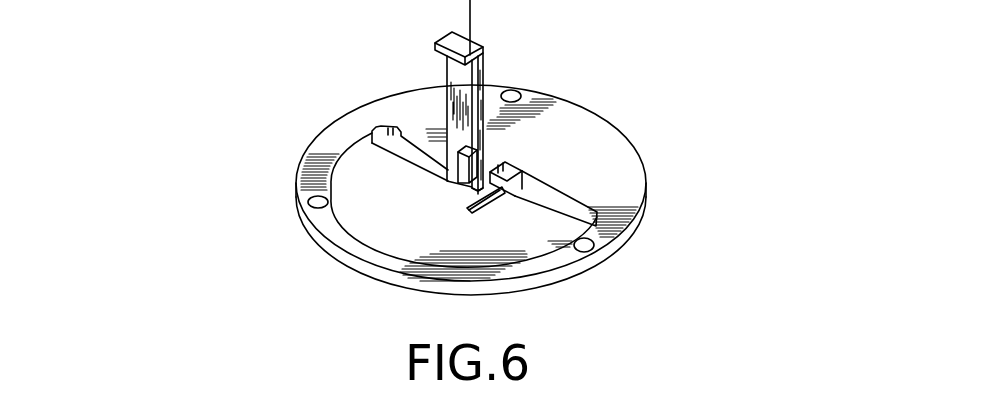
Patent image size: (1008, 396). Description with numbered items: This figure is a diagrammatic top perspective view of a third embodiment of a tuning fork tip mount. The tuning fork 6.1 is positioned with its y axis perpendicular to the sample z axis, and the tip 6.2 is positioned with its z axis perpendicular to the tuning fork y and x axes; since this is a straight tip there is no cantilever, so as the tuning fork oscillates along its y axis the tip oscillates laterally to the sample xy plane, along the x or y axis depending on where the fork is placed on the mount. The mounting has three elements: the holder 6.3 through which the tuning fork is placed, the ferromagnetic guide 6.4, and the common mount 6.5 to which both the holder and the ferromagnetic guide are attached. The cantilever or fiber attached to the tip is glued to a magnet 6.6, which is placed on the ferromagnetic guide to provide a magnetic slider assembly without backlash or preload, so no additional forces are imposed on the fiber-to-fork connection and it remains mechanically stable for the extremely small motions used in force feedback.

The tuning fork 6.1 is at (495, 208).
The tip 6.2 is at (458, 199).
The holder 6.3 is at (521, 173).
The ferromagnetic guide 6.4 is at (453, 94).
The mount 6.5 is at (607, 190).
The magnet 6.6 is at (449, 170).